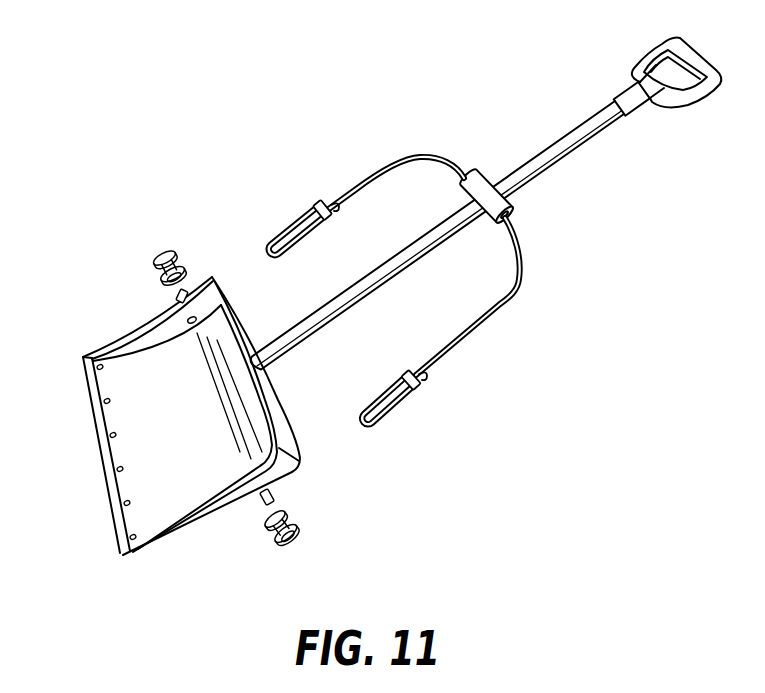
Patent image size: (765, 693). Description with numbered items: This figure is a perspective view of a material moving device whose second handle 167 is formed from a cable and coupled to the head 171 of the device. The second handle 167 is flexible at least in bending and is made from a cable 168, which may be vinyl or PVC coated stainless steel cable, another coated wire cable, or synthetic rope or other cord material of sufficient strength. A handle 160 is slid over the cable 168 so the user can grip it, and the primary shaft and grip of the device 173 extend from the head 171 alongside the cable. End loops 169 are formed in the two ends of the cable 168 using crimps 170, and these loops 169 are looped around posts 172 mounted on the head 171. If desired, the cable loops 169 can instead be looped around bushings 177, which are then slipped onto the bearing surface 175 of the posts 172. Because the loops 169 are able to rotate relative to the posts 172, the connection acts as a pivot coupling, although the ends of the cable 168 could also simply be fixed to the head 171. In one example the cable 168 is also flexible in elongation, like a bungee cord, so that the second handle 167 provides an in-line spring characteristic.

The handle 160 is at (513, 200).
The second handle 167 is at (463, 311).
The cable 168 is at (521, 284).
The end loops 169 is at (367, 432).
The crimps 170 is at (423, 388).
The head 171 is at (143, 457).
The posts 172 is at (178, 305).
The shovel handle 173 is at (562, 158).
The bearing surface 175 is at (186, 292).
The bushings 177 is at (172, 251).